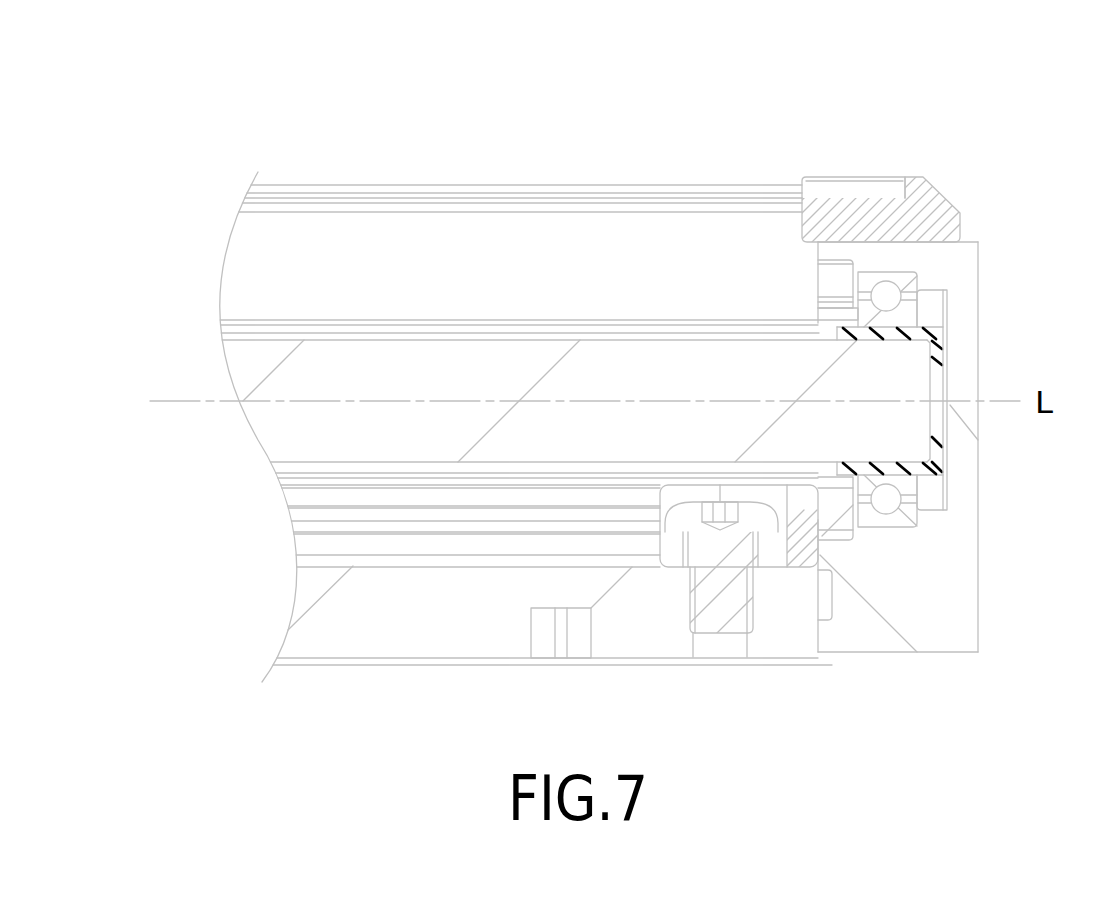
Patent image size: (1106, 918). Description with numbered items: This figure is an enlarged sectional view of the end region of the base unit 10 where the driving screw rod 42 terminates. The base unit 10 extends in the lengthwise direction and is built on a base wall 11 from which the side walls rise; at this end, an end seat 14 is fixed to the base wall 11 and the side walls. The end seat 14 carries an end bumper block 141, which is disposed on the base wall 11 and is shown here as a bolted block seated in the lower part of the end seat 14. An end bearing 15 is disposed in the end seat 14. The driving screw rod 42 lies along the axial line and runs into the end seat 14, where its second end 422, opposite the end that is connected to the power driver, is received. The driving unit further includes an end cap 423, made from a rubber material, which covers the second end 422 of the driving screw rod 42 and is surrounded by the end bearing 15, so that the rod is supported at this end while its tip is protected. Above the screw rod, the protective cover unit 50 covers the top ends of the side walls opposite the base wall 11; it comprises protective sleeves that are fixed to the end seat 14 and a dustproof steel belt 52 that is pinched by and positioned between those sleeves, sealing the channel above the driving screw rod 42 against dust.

The base unit 10 is at (552, 619).
The base wall 11 is at (561, 633).
The end seat 14 is at (943, 603).
The end bearing 15 is at (887, 271).
The driving screw rod 42 is at (417, 368).
The protective cover unit 50 is at (562, 190).
The dustproof steel belt 52 is at (522, 198).
The end bumper block 141 is at (783, 557).
The second end 422 is at (890, 360).
The end cap 423 is at (923, 472).